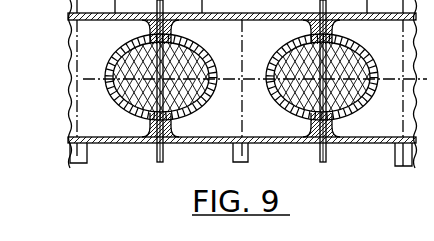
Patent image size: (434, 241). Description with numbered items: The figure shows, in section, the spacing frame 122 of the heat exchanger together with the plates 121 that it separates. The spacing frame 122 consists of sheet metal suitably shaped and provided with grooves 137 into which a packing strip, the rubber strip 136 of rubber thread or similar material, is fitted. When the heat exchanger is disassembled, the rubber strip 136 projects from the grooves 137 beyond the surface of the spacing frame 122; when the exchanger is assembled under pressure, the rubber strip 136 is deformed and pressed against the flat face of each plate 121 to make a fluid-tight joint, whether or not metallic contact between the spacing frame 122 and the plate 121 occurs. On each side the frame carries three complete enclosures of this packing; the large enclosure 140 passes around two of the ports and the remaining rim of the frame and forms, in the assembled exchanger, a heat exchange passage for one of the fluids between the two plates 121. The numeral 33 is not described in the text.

The support wall 33 is at (36, 84).
The plate 121 is at (158, 148).
The spacing frame 122 is at (214, 144).
The rubber strip 136 is at (115, 102).
The grooves 137 is at (123, 81).
The large enclosure of packing material 140 is at (303, 97).